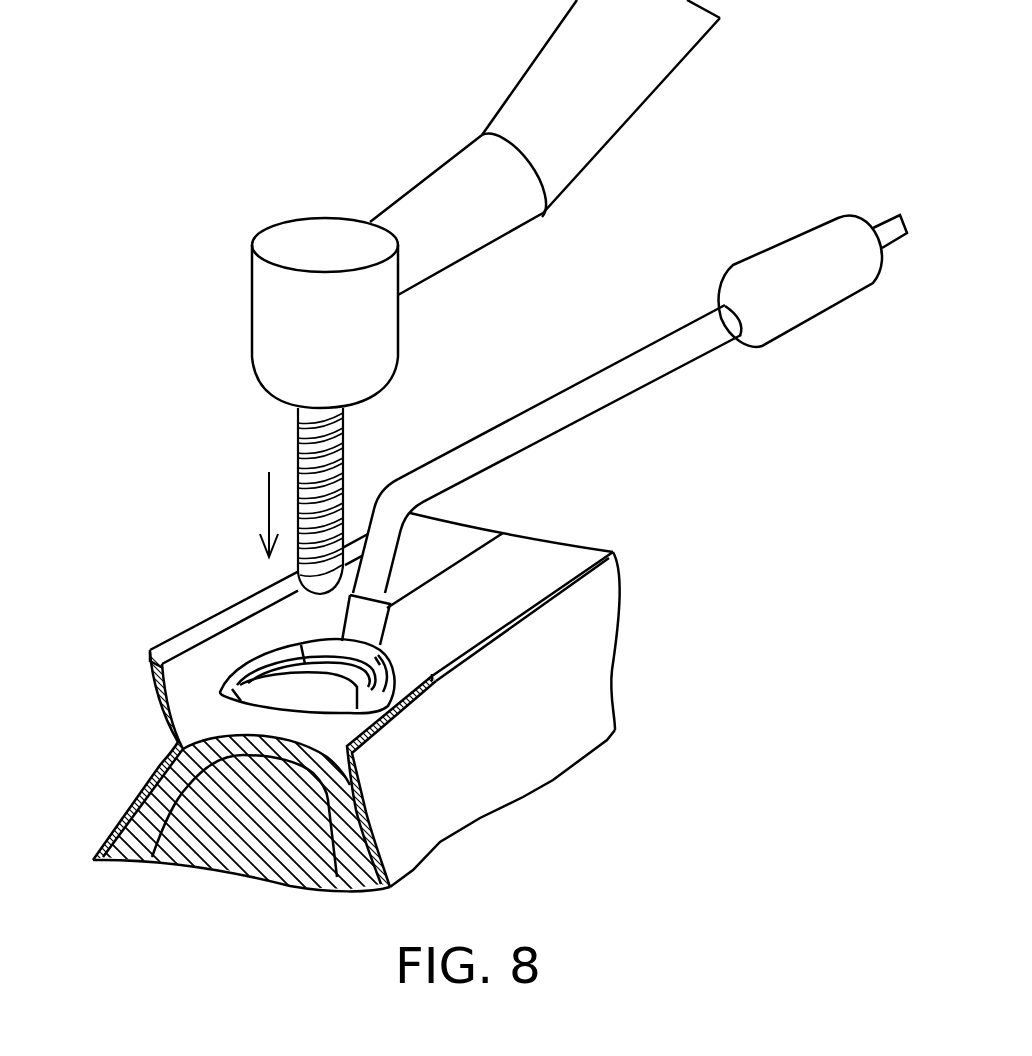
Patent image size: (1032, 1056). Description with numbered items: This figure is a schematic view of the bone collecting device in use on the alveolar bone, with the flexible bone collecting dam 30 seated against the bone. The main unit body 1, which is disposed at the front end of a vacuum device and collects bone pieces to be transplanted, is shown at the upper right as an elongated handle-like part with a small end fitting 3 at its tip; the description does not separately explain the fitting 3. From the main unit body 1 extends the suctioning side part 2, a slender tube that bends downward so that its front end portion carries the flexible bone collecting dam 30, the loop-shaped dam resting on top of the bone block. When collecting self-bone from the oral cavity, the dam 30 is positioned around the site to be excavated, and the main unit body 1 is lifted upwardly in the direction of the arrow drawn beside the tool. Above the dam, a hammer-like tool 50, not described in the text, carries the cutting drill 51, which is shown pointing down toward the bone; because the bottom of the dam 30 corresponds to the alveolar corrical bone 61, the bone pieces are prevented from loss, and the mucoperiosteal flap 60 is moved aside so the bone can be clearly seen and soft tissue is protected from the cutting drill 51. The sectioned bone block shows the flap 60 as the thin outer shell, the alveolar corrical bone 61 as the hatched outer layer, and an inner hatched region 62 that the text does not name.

The main unit body 1 is at (785, 255).
The suctioning side part 2 is at (563, 410).
The peg 3 is at (885, 218).
The flexible bone collecting dam 30 is at (263, 663).
The hammer 50 is at (325, 232).
The cutting drill 51 is at (298, 440).
The mucoperiosteal flap 60 is at (160, 692).
The alveolar corrical bone 61 is at (160, 785).
The core 62 is at (190, 832).